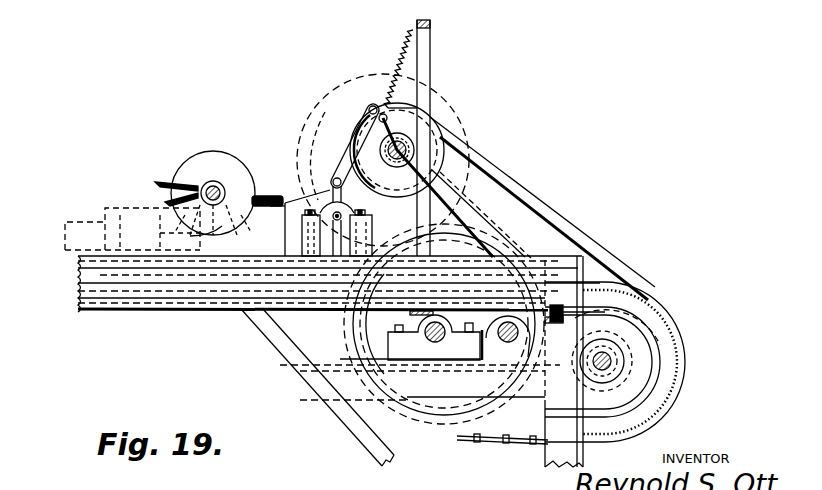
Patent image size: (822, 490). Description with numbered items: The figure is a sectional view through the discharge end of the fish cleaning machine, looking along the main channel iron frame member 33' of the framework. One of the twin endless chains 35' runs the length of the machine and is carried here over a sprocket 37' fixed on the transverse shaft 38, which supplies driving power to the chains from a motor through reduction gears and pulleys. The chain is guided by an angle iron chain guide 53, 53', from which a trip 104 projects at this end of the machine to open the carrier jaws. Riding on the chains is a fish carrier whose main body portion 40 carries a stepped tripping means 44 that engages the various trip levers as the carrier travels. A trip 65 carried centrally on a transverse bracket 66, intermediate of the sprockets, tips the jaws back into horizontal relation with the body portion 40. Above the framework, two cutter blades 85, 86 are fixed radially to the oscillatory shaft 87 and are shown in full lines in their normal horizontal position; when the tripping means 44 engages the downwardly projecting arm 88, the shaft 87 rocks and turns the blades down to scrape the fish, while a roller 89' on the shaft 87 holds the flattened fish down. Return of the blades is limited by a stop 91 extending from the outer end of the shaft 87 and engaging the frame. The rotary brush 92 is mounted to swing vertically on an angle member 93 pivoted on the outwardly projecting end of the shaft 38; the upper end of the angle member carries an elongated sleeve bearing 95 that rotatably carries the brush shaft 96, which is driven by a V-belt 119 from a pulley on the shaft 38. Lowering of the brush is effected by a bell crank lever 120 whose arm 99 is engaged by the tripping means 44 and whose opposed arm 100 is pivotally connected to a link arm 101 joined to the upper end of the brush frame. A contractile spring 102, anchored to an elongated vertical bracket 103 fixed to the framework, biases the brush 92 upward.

The channel iron frame member 33' is at (289, 319).
The endless chain 35' is at (490, 454).
The sprocket 37' is at (420, 328).
The transverse shaft 38 is at (612, 363).
The main body portion 40 is at (68, 238).
The tripping means 44 is at (125, 206).
The angle iron chain guide 53 is at (636, 362).
The angle iron chain guide 53' is at (315, 284).
The trip 65 is at (555, 305).
The transverse bracket 66 is at (618, 300).
The cutter blade 85 is at (167, 201).
The cutter blade 86 is at (182, 182).
The oscillatory shaft 87 is at (210, 186).
The downwardly projecting arm 88 is at (190, 236).
The roller 89' is at (213, 179).
The stop 91 is at (267, 195).
The rotary brush 92 is at (462, 97).
The angle member 93 is at (465, 212).
The elongated sleeve bearing 95 is at (412, 152).
The shaft 96 is at (380, 140).
The arm 99 is at (333, 200).
The arm 100 is at (278, 212).
The link arm 101 is at (345, 182).
The contractile spring 102 is at (408, 50).
The elongated vertical bracket 103 is at (430, 53).
The trip 104 is at (696, 303).
The V-belt 119 is at (574, 230).
The bell crank lever 120 is at (250, 312).